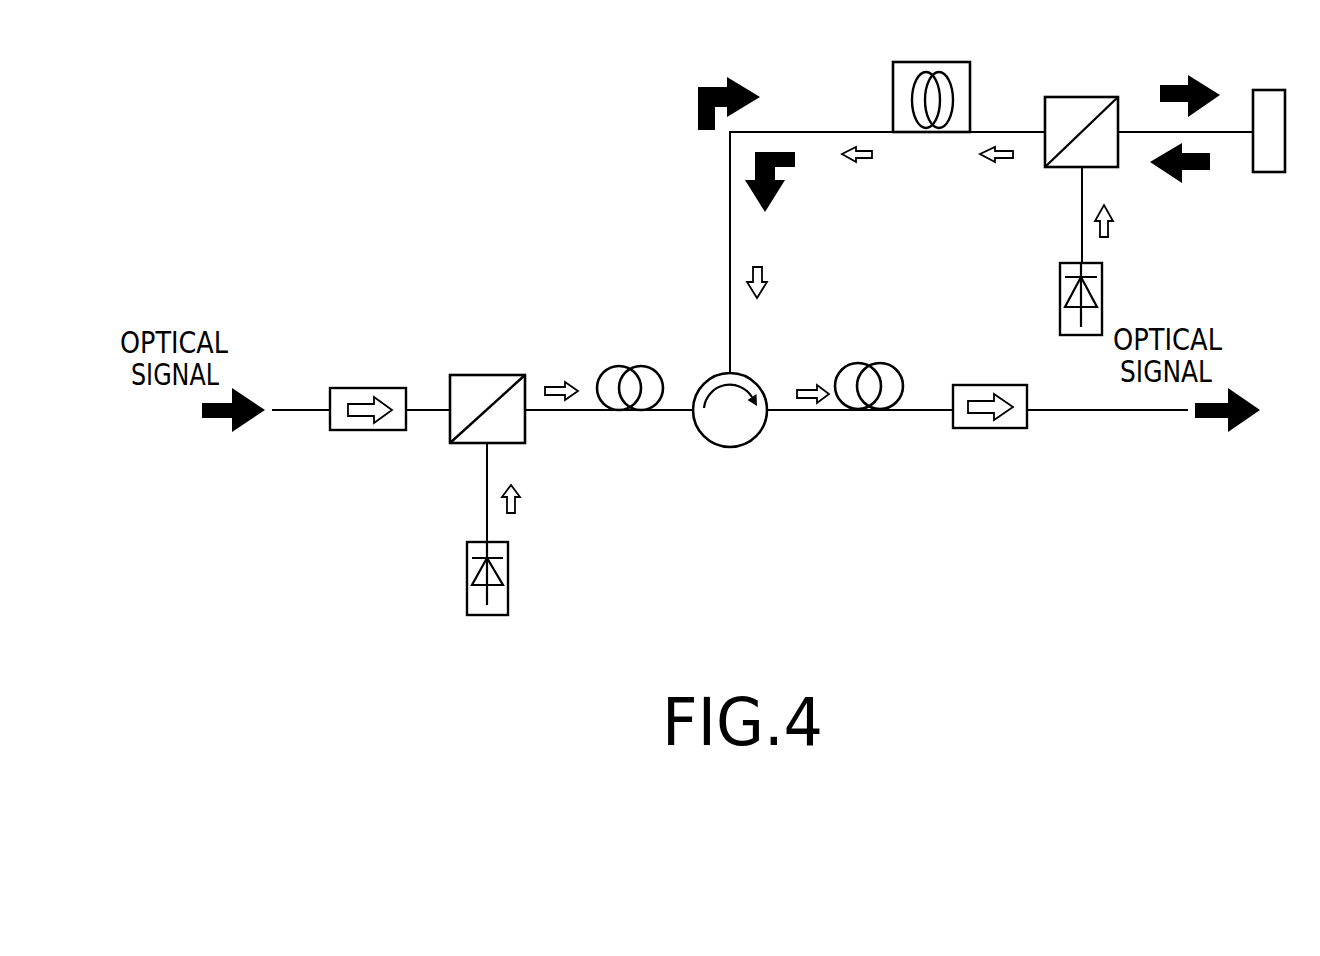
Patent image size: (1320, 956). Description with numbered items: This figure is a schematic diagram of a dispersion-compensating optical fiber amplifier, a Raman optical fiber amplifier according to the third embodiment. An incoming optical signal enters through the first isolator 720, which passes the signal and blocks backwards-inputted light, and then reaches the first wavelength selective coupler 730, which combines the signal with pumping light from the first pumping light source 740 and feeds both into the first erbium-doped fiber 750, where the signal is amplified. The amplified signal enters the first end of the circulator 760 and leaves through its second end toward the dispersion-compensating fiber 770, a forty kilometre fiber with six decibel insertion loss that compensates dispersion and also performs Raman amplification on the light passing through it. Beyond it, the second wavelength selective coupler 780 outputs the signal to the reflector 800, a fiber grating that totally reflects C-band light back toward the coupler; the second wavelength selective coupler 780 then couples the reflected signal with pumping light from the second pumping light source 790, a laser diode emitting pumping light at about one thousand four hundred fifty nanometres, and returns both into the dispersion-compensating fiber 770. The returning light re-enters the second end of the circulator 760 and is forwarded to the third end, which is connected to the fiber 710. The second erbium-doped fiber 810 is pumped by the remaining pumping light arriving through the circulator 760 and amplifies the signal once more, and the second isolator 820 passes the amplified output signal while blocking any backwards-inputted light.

The fiber 710 is at (302, 408).
The first isolator 720 is at (367, 386).
The first wavelength selective coupler 730 is at (487, 374).
The first pumping light source 740 is at (509, 578).
The first erbium-doped fiber 750 is at (629, 364).
The circulator 760 is at (730, 448).
The dispersion-compensating fiber 770 is at (931, 60).
The second wavelength selective coupler 780 is at (1082, 95).
The second pumping light source 790 is at (1103, 298).
The reflector 800 is at (1269, 88).
The second erbium-doped fiber 810 is at (869, 362).
The second isolator 820 is at (989, 384).